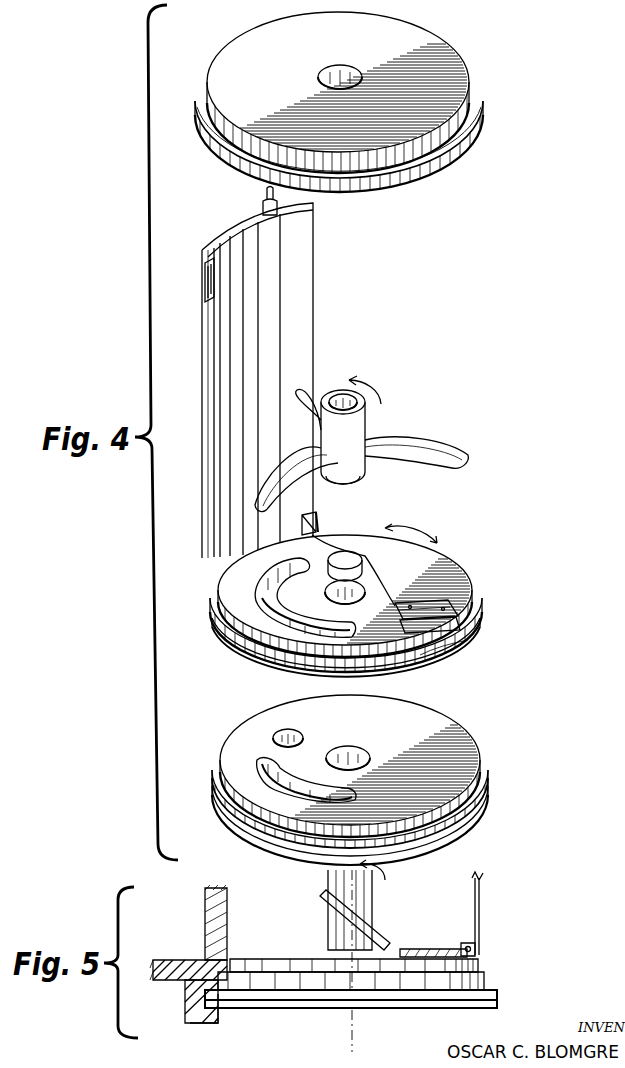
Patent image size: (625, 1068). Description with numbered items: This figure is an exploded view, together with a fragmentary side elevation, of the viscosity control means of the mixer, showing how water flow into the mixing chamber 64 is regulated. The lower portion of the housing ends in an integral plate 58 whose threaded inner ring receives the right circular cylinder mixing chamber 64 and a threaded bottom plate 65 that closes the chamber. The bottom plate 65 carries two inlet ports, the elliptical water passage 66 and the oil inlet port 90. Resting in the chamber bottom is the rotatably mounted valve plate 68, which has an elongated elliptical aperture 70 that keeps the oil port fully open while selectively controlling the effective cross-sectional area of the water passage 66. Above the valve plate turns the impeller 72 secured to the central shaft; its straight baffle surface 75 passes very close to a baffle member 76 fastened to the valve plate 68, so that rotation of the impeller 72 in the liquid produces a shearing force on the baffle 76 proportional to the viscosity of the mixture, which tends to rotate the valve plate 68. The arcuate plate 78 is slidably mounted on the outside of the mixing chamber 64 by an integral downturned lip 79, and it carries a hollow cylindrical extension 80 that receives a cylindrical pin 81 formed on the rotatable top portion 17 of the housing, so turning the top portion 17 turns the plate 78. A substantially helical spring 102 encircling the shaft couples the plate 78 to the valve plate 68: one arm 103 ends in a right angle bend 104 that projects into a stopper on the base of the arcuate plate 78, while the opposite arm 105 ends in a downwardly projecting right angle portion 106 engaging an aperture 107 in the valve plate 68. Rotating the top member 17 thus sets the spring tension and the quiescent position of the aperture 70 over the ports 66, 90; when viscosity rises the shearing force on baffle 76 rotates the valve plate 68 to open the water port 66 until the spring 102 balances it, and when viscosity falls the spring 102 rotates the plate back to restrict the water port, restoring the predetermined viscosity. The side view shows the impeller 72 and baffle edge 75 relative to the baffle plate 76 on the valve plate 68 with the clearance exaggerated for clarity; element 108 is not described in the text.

In FIG. 4, the rotatable top portion of the housing 17 is at (403, 38).
In FIG. 5, the integral plate 58 is at (185, 1002).
In FIG. 5, the mixing chamber 64 is at (204, 927).
In FIG. 4, the bottom plate 65 is at (432, 735).
In FIG. 5, the bottom plate 65 is at (320, 962).
In FIG. 4, the elliptical fluid passage 66 is at (260, 763).
In FIG. 5, the valve plate 68 is at (330, 981).
In FIG. 4, the elongated elliptical fluid passage 70 is at (255, 600).
In FIG. 4, the impeller 72 is at (425, 447).
In FIG. 5, the impeller 72 is at (320, 897).
In FIG. 4, the straight baffle surface 75 is at (330, 480).
In FIG. 5, the straight baffle surface 75 is at (388, 948).
In FIG. 4, the baffle member 76 is at (470, 616).
In FIG. 5, the baffle member 76 is at (418, 949).
In FIG. 4, the arcuate plate 78 is at (292, 480).
In FIG. 5, the arcuate plate 78 is at (480, 910).
In FIG. 4, the downturned lip 79 is at (220, 272).
In FIG. 4, the hollow cylindrical extension 80 is at (261, 208).
In FIG. 4, the cylindrical pin 81 is at (265, 192).
In FIG. 4, the oil inlet port 90 is at (275, 733).
In FIG. 4, the spring 102 is at (364, 561).
In FIG. 4, the spring arm 103 is at (325, 545).
In FIG. 4, the right angle bend 104 is at (300, 525).
In FIG. 4, the spring arm 105 is at (366, 580).
In FIG. 4, the downwardly projecting right angle portion 106 is at (455, 612).
In FIG. 4, the aperture 107 is at (456, 648).
In FIG. 4, the stop 108 is at (318, 520).
In FIG. 5, the stop 108 is at (476, 953).